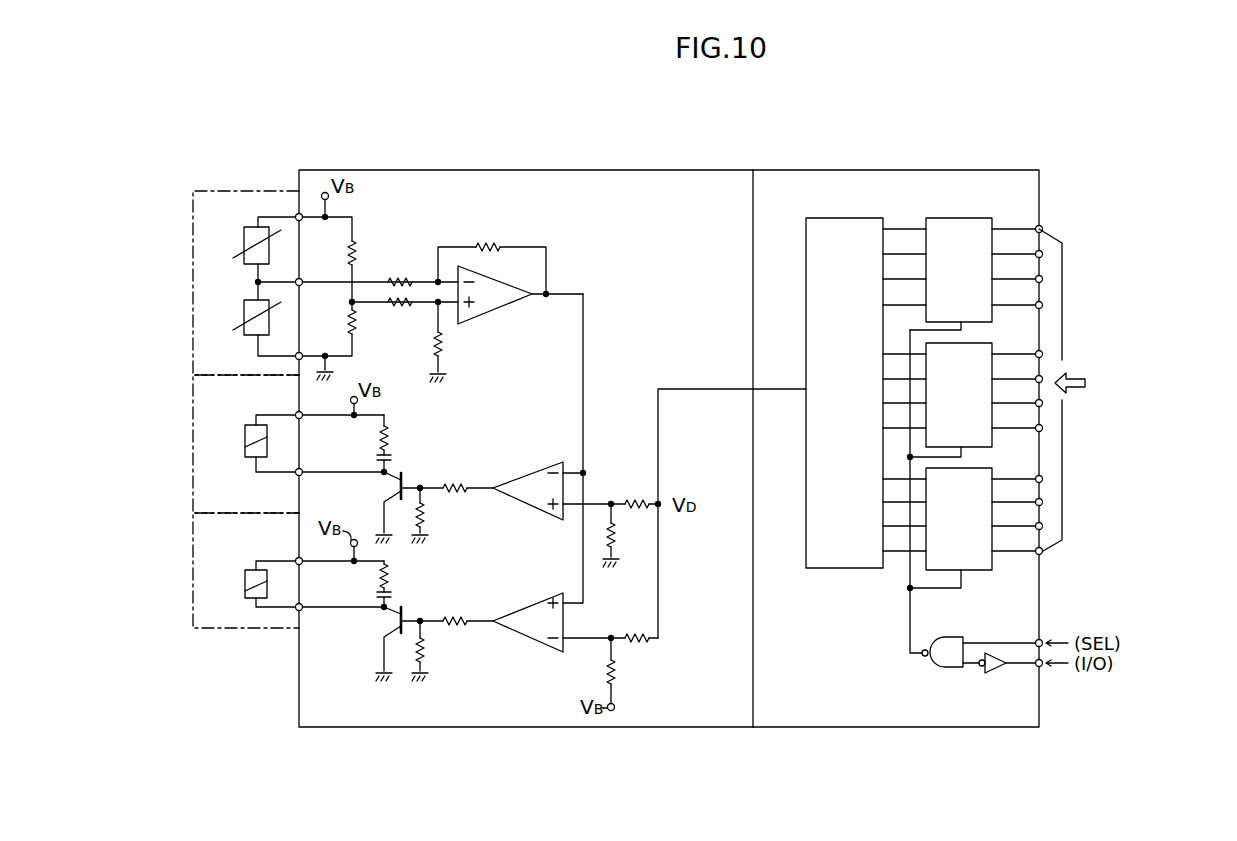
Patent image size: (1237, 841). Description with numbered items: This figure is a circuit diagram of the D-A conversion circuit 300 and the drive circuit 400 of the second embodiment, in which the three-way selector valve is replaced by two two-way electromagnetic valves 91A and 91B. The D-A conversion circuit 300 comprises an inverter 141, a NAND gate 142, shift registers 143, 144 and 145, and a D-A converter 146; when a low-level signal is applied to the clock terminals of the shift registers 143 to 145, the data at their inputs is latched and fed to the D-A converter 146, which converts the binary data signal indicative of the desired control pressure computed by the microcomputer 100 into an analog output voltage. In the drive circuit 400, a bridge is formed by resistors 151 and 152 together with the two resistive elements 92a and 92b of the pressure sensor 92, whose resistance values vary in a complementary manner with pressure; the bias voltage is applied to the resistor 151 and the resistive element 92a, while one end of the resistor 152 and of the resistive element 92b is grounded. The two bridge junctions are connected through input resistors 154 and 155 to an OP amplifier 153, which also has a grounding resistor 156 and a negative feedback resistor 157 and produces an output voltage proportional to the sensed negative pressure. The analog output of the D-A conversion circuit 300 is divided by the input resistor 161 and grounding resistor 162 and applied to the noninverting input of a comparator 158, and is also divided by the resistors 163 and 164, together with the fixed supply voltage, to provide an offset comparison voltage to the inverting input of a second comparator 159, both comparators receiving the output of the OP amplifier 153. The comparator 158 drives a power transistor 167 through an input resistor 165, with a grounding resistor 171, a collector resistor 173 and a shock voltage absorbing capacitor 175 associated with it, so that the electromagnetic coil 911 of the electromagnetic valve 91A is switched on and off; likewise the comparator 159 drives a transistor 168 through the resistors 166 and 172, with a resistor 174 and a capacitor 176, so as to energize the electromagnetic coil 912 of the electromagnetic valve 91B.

The drive circuit 400 is at (625, 170).
The D-A conversion circuit 300 is at (976, 170).
The pressure sensor 92 is at (193, 208).
The resistive element 92a is at (244, 243).
The resistive element 92b is at (244, 318).
The electromagnetic valve 91A is at (192, 440).
The electromagnetic valve 91B is at (192, 548).
The electromagnetic coil 911 is at (245, 441).
The electromagnetic coil 912 is at (245, 585).
The microcomputer 100 is at (1129, 390).
The inverter 141 is at (993, 668).
The NAND gate 142 is at (942, 667).
The shift register 143 is at (974, 218).
The shift register 144 is at (985, 343).
The shift register 145 is at (985, 468).
The D-A converter 146 is at (876, 218).
The resistor 151 is at (356, 257).
The resistor 152 is at (349, 327).
The OP amplifier 153 is at (492, 311).
The input resistor 154 is at (402, 279).
The input resistor 155 is at (404, 306).
The grounding resistor 156 is at (441, 346).
The negative feedback resistor 157 is at (498, 228).
The comparator 158 is at (530, 474).
The comparator 159 is at (532, 606).
The input resistor 161 is at (637, 500).
The grounding resistor 162 is at (613, 538).
The resistor 163 is at (637, 634).
The resistor 164 is at (615, 672).
The input resistor 165 is at (456, 484).
The resistor 166 is at (456, 617).
The power transistor 167 is at (399, 486).
The transistor 168 is at (399, 620).
The grounding resistor 171 is at (424, 517).
The resistor 172 is at (424, 652).
The collector resistor 173 is at (388, 434).
The resistor 174 is at (390, 580).
The shock voltage absorbing capacitor 175 is at (392, 457).
The capacitor 176 is at (379, 594).